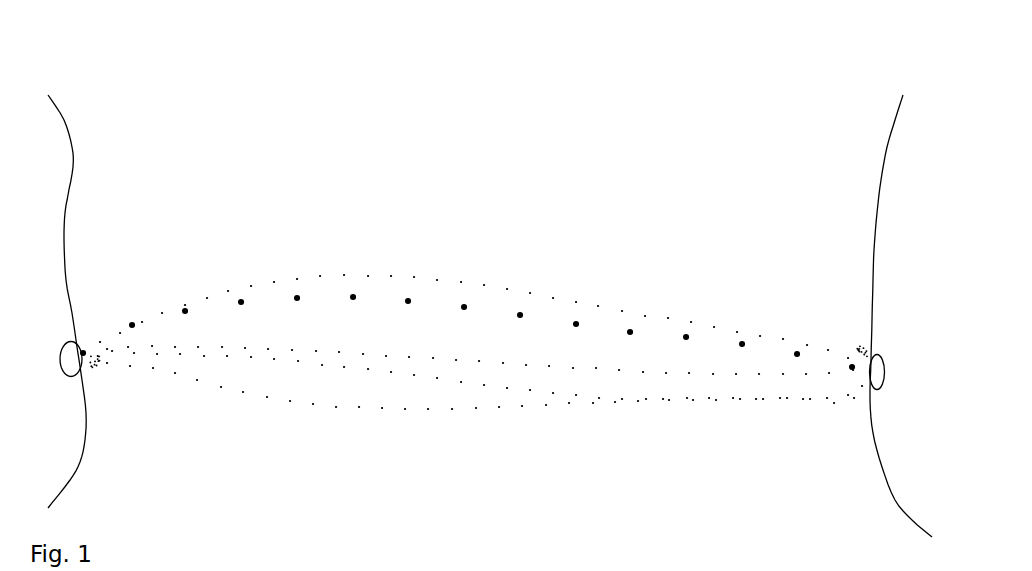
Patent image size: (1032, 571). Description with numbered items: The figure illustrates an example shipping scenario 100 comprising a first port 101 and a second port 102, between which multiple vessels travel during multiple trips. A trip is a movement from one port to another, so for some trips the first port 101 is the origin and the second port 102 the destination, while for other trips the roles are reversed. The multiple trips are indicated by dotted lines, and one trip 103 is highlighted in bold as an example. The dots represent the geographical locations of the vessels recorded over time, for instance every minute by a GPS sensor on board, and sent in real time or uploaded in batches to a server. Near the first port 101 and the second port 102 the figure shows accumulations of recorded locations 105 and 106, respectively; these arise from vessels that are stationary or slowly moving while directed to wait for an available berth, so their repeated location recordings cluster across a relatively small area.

The shipping scenario 100 is at (310, 52).
The first port 101 is at (67, 343).
The second port 102 is at (883, 360).
The trip 103 is at (632, 330).
The accumulation of recorded locations 105 is at (98, 373).
The accumulation of recorded locations 106 is at (862, 350).